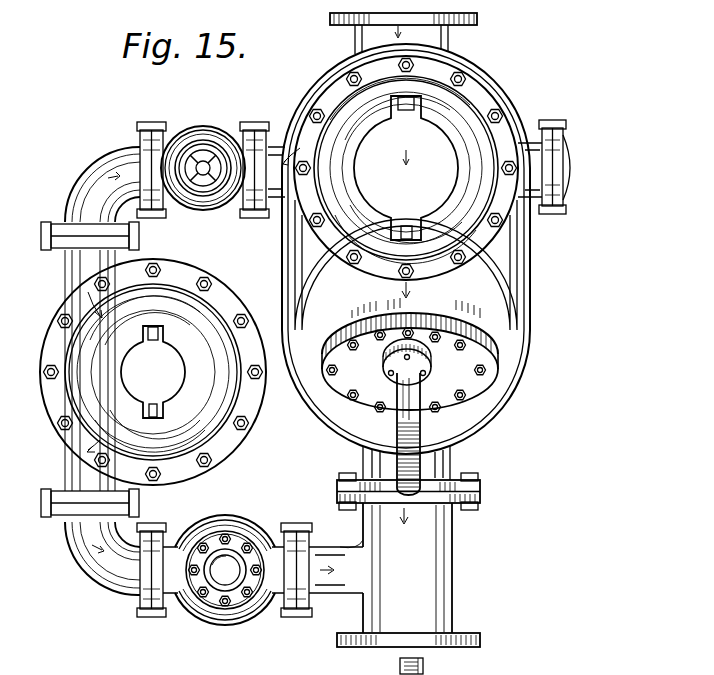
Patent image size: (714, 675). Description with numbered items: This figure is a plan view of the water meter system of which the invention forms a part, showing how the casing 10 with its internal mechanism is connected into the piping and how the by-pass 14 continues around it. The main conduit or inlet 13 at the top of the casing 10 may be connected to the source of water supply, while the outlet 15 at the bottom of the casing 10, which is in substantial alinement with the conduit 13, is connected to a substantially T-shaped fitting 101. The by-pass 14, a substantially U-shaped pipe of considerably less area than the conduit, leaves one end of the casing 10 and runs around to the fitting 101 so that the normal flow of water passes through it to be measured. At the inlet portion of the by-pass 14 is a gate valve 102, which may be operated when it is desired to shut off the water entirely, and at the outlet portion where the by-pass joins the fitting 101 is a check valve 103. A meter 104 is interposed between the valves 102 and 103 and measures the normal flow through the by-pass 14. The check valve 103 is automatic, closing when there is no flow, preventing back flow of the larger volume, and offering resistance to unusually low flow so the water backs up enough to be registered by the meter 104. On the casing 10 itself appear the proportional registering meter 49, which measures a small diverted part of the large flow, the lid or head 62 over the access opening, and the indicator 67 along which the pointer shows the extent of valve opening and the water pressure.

The casing 10 is at (425, 249).
The main conduit 13 is at (445, 39).
The by-pass 14 is at (273, 147).
The outlet opening 15 is at (450, 469).
The proportional registering meter 49 is at (490, 133).
The lid or head 62 is at (475, 383).
The indicator 67 is at (403, 447).
The T-shaped fitting 101 is at (443, 575).
The gate valve 102 is at (207, 147).
The check valve 103 is at (227, 547).
The meter 104 is at (205, 315).